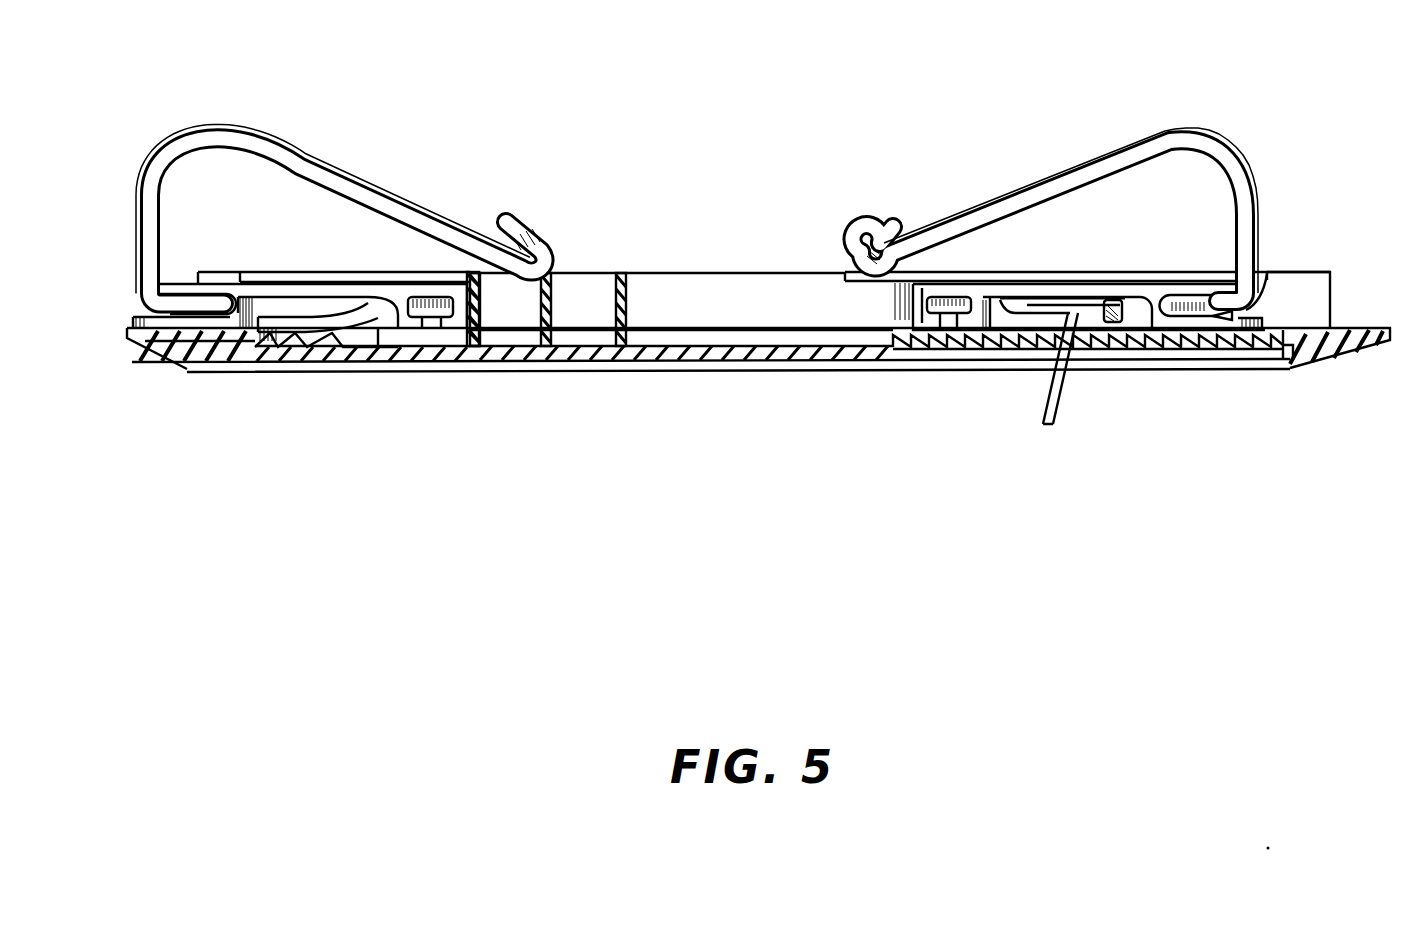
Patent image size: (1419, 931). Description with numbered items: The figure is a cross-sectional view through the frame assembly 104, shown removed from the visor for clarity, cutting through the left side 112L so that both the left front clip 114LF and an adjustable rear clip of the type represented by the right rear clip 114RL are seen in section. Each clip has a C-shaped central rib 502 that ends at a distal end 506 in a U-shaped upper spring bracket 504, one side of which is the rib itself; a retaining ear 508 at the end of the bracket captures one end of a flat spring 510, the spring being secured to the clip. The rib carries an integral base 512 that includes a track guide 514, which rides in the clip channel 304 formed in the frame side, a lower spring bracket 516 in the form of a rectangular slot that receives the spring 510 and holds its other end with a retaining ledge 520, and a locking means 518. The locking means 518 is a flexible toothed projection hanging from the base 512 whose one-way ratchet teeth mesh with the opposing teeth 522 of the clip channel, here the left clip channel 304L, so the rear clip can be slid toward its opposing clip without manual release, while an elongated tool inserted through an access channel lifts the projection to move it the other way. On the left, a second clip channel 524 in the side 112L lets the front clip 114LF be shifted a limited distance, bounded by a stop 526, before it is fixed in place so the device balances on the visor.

The frame assembly 104 is at (613, 373).
The left side 112L is at (745, 356).
The left front clip 114LF is at (222, 112).
The right rear clip 114RL is at (1046, 180).
The clip channel 304 is at (1315, 293).
The left clip channel 304L is at (955, 362).
The central rib 502 is at (1082, 190).
The upper spring bracket 504 is at (856, 258).
The distal end 506 is at (882, 222).
The retaining ear 508 is at (898, 236).
The flat spring 510 is at (1244, 160).
The base 512 is at (1195, 280).
The track guide 514 is at (973, 324).
The lower spring bracket 516 is at (1165, 324).
The locking means 518 is at (303, 320).
The retaining ledge 520 is at (1247, 308).
The teeth 522 is at (292, 344).
The second clip channel 524 is at (376, 332).
The stop 526 is at (470, 306).